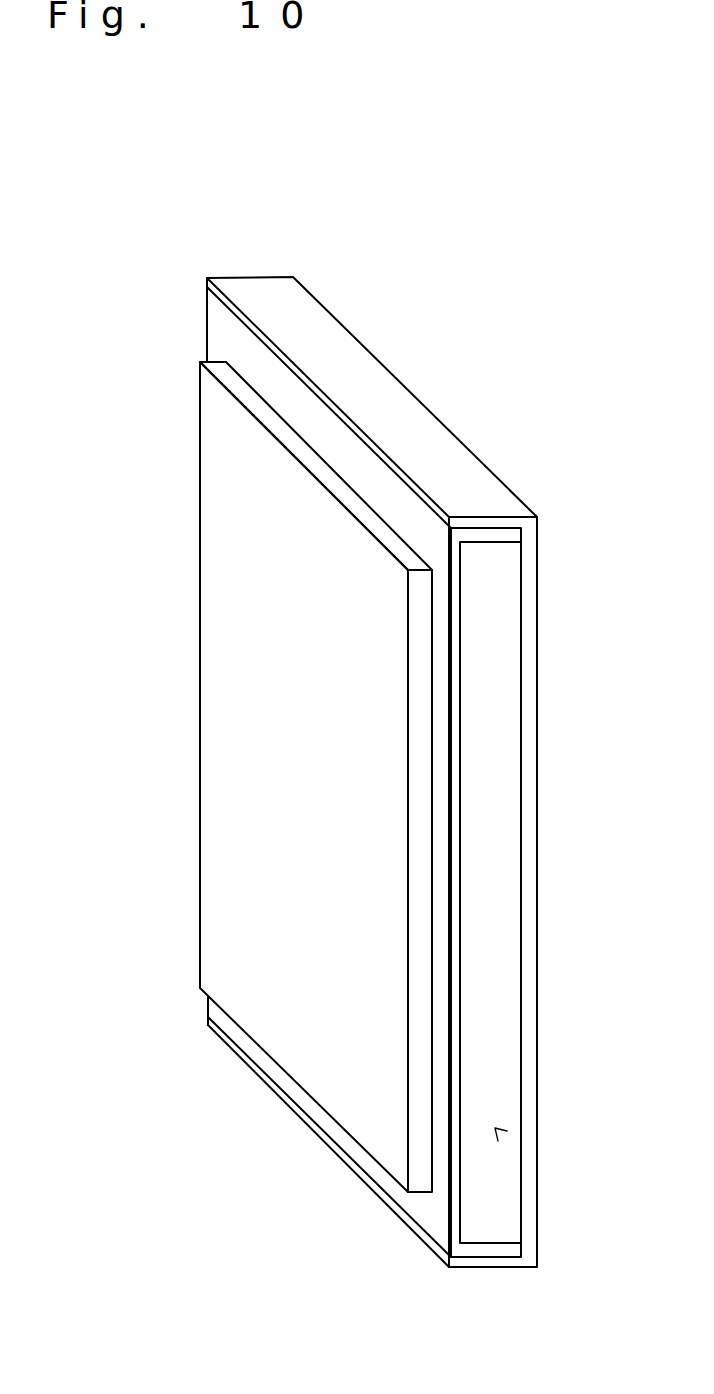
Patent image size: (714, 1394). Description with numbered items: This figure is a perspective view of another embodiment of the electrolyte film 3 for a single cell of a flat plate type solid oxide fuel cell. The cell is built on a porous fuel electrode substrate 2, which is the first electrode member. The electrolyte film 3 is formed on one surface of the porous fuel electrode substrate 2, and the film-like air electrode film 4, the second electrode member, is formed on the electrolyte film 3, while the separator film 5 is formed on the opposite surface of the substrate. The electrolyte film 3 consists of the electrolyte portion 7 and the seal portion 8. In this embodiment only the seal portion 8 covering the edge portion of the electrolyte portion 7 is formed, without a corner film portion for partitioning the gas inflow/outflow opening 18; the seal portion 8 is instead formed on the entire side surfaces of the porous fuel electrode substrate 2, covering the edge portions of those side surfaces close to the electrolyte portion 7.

The porous fuel electrode substrate 2 is at (497, 898).
The electrolyte film 3 is at (429, 810).
The air electrode film 4 is at (210, 831).
The separator film 5 is at (530, 992).
The electrolyte portion 7 is at (442, 745).
The seal portion 8 is at (484, 535).
The gas inflow/outflow opening 18 is at (495, 1128).